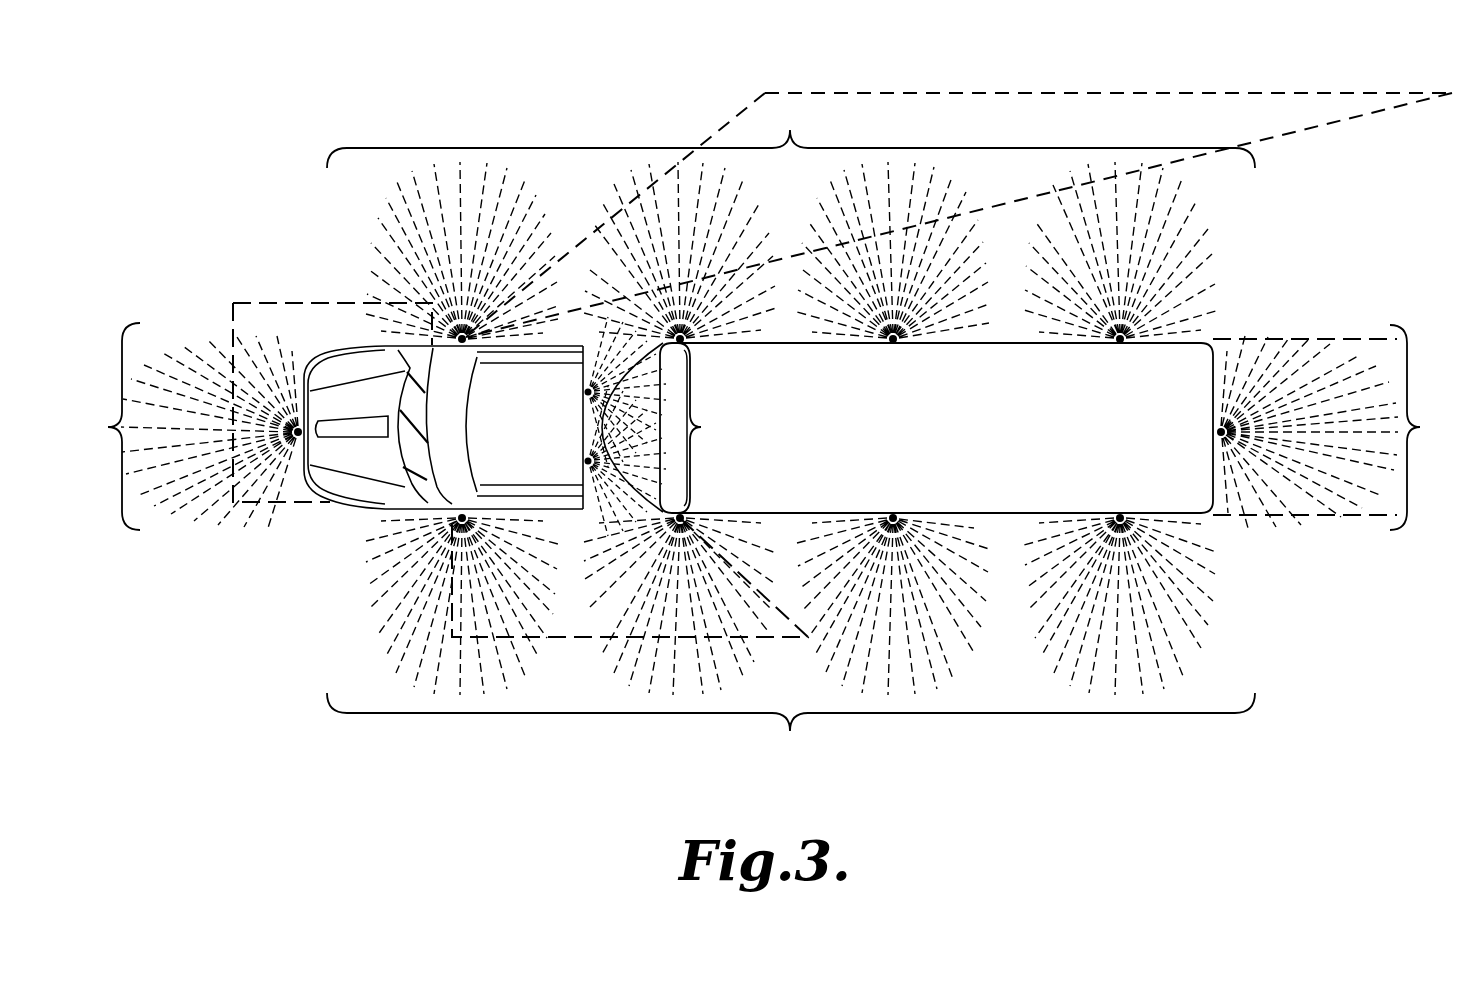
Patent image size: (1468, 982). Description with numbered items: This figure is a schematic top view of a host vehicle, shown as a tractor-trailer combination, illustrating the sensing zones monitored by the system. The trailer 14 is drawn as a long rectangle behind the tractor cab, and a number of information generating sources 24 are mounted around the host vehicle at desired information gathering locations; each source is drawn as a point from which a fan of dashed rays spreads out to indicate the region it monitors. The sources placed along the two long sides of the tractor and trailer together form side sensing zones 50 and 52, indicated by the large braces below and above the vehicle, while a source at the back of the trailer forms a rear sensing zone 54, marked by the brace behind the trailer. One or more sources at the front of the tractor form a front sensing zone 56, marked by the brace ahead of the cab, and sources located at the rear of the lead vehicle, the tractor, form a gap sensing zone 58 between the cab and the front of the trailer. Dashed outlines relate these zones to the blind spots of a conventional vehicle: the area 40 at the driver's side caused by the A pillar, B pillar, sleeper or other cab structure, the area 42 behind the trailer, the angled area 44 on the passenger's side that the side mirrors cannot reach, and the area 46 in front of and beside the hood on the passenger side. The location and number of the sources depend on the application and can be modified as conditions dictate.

The trailer 14 is at (1213, 513).
The information generating source 24 is at (1122, 338).
The driver's side blind spot area 40 is at (445, 596).
The rear blind spot area 42 is at (1328, 338).
The passenger's side angled blind spot area 44 is at (1043, 93).
The front blind spot area 46 is at (232, 303).
The side sensing zone 50 is at (791, 730).
The side sensing zone 52 is at (791, 134).
The rear sensing zone 54 is at (1422, 427).
The front sensing zone 56 is at (107, 426).
The gap sensing zone 58 is at (705, 428).